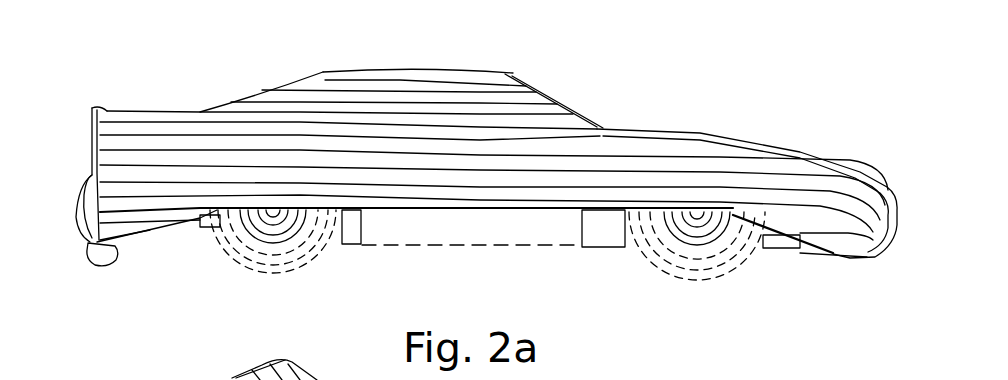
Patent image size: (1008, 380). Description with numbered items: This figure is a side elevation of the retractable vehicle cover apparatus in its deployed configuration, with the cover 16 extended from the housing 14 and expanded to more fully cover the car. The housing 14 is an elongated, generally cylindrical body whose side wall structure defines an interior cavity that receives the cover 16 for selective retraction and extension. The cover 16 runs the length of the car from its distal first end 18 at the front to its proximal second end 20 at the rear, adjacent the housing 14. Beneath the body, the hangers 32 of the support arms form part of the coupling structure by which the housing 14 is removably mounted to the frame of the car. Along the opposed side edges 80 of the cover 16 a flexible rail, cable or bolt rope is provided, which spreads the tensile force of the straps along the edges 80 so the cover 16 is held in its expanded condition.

The housing 14 is at (115, 262).
The cover 16 is at (505, 130).
The distal first end 18 is at (787, 207).
The proximal second end 20 is at (113, 177).
The hanger 32 is at (360, 228).
The side edges 80 is at (448, 210).